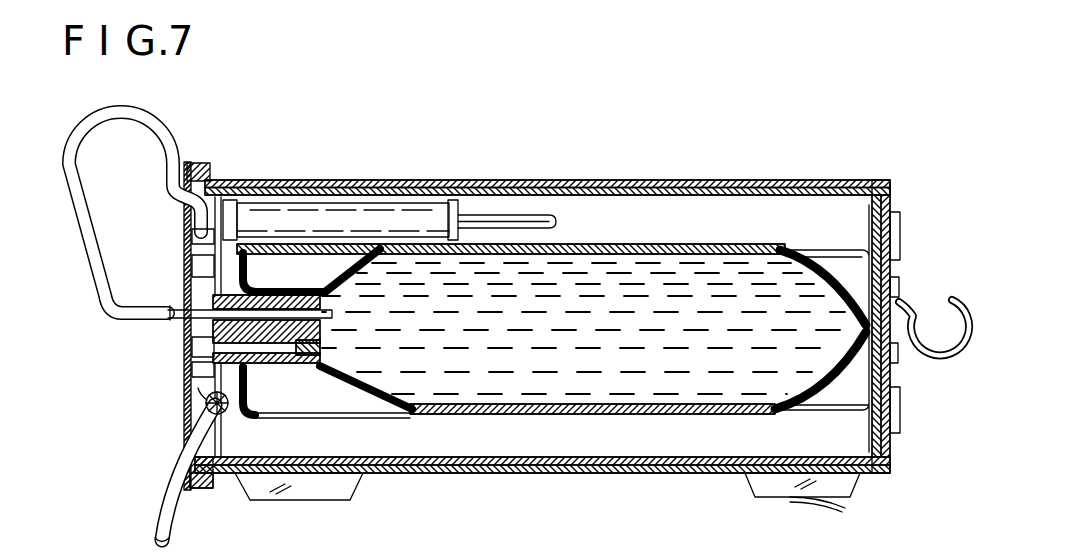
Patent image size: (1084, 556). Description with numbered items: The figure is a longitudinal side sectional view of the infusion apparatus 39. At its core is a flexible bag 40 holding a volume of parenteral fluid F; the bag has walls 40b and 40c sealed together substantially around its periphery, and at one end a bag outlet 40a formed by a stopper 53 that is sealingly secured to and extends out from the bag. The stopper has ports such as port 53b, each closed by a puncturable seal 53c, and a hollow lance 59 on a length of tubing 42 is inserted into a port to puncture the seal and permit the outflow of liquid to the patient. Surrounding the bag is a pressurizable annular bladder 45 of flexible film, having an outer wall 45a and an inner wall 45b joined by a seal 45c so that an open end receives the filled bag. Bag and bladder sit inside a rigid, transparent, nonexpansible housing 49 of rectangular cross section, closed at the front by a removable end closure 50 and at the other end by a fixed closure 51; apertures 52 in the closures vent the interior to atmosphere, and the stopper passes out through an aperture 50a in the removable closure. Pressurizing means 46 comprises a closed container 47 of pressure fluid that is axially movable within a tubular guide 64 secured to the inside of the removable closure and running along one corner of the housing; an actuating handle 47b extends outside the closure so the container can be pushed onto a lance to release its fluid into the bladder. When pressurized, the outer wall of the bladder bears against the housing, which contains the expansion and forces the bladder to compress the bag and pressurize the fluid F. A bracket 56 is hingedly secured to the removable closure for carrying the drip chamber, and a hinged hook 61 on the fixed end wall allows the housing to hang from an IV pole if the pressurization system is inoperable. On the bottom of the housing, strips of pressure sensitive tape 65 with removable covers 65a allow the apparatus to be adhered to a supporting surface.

The infusion apparatus 39 is at (590, 71).
The flexible bag 40 is at (558, 396).
The bag outlet 40a is at (210, 296).
The bag wall 40b is at (792, 247).
The bag wall 40c is at (727, 408).
The tubing 42 is at (79, 119).
The pressurizable annular bladder 45 is at (822, 186).
The outer wall of bladder 45a is at (661, 247).
The inner wall of bladder 45b is at (672, 300).
The seal 45c is at (856, 244).
The pressurizing means 46 is at (334, 184).
The container 47 is at (434, 208).
The actuating handle 47b is at (215, 200).
The housing 49 is at (630, 170).
The removable end closure 50 is at (215, 485).
The aperture 50a is at (245, 212).
The fixed closure 51 is at (894, 266).
The apertures 52 is at (891, 207).
The stopper 53 is at (328, 300).
The port 53b is at (213, 385).
The puncturable seal 53c is at (312, 368).
The bracket 56 is at (213, 410).
The hollow lance 59 is at (333, 316).
The hook 61 is at (908, 332).
The tubular guide 64 is at (466, 208).
The pressure sensitive tape strips 65 is at (335, 503).
The removable cover 65a is at (845, 504).
The parenteral fluid F is at (705, 298).